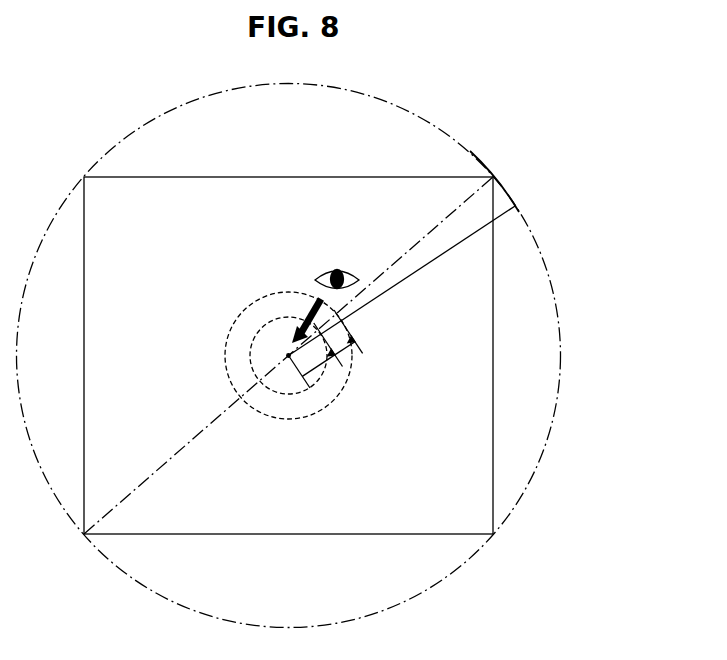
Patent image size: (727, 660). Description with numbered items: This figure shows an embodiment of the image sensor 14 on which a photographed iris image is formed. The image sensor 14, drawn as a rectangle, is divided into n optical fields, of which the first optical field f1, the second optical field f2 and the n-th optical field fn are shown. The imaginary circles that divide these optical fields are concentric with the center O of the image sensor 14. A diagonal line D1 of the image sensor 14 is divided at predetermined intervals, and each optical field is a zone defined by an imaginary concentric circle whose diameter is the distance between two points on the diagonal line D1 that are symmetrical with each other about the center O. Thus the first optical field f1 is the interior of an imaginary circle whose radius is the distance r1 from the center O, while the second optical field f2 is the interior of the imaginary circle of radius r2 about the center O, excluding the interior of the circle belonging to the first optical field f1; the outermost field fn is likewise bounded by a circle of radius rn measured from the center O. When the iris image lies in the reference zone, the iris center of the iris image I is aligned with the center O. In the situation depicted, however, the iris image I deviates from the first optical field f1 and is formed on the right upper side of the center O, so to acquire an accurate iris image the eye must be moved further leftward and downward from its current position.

The n-th optical field fn is at (65, 202).
The image sensor 14 is at (463, 279).
The diagonal line D1 is at (513, 209).
The center of the image sensor O is at (288, 356).
The first optical field f1 is at (257, 333).
The second optical field f2 is at (270, 295).
The n-th radius rn is at (373, 300).
The first radius r1 is at (342, 366).
The second radius r2 is at (363, 353).
The iris image I is at (359, 280).